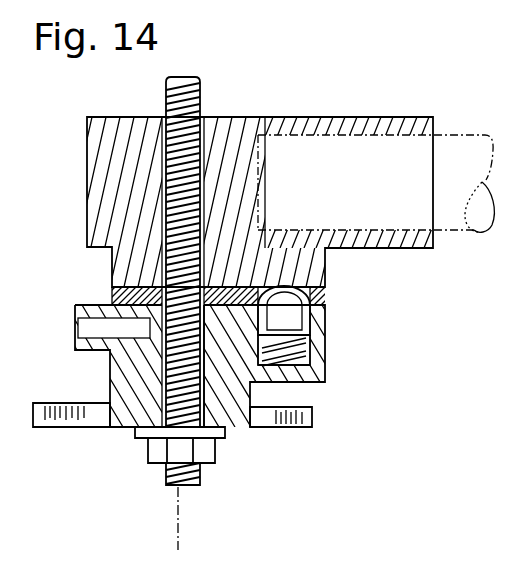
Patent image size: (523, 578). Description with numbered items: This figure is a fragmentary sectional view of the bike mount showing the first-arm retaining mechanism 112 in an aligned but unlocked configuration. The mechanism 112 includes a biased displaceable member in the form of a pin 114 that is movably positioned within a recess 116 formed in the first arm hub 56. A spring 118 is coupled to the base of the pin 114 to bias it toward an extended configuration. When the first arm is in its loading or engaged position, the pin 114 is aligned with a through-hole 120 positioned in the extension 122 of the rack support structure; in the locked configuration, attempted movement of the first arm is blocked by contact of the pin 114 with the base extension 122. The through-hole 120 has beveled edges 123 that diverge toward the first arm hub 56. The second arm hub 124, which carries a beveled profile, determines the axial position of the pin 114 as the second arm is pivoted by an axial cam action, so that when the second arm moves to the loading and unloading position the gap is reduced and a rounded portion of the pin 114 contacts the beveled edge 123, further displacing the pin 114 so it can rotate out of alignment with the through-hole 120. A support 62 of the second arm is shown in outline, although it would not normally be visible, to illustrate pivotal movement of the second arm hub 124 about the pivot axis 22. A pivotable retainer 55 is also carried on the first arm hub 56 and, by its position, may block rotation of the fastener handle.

The second arm hub 124 is at (97, 208).
The support 62 is at (460, 133).
The extension 122 is at (112, 297).
The first arm hub 56 is at (118, 395).
The pivotable retainer 55 is at (92, 430).
The pivot axis 22 is at (176, 518).
The pin 114 is at (282, 302).
The through-hole 120 is at (300, 290).
The beveled edges 123 is at (300, 318).
The spring 118 is at (318, 356).
The recess 116 is at (282, 363).
The first-arm retaining mechanism 112 is at (381, 287).